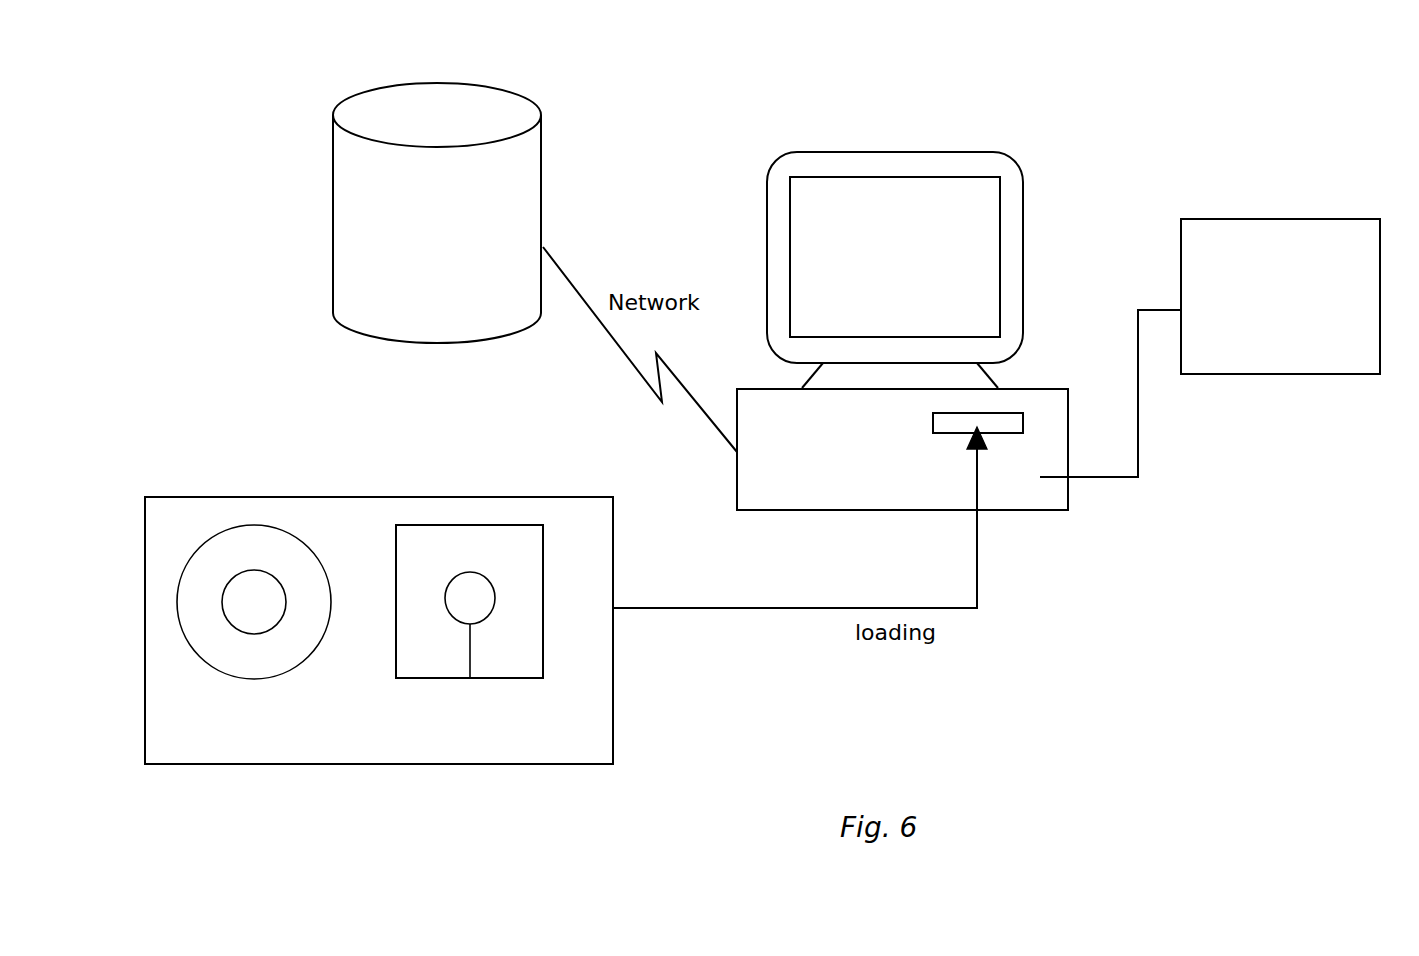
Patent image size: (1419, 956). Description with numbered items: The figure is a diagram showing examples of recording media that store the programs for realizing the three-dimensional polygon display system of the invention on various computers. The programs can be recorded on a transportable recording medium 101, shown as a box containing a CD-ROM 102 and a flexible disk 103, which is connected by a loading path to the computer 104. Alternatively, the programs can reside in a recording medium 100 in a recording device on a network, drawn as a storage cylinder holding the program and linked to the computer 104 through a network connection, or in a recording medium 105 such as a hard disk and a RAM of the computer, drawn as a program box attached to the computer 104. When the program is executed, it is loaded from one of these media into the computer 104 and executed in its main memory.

The recording medium in a recording device on a network 100 is at (517, 92).
The transportable recording medium 101 is at (167, 497).
The CD-ROM 102 is at (250, 522).
The flexible disk 103 is at (440, 525).
The computer 104 is at (988, 150).
The recording medium 105 is at (1292, 219).